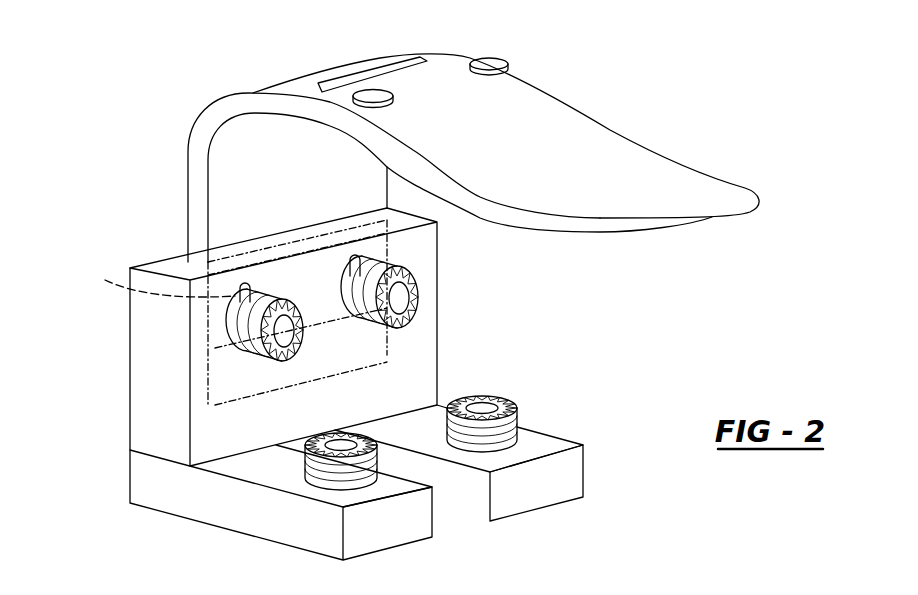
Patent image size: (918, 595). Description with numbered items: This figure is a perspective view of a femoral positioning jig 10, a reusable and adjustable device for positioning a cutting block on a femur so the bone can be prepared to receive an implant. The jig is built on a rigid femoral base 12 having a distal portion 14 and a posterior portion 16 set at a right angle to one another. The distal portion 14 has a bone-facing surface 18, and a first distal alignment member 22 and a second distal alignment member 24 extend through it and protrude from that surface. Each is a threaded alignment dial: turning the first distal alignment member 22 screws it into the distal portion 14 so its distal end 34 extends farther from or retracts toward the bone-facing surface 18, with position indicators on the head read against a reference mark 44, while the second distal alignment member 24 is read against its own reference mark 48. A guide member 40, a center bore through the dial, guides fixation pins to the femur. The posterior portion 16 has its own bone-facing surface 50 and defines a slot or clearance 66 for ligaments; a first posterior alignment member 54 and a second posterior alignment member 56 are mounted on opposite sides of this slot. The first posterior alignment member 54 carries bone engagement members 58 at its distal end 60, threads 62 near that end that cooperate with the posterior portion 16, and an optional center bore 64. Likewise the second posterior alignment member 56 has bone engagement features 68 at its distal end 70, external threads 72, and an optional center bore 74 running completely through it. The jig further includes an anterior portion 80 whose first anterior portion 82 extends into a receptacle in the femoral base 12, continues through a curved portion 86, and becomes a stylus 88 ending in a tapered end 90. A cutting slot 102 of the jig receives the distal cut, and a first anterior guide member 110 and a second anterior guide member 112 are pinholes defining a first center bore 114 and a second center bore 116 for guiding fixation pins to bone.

The femoral positioning jig 10 is at (172, 89).
The femoral base 12 is at (150, 448).
The distal portion 14 is at (150, 326).
The posterior portion 16 is at (170, 493).
The bone-facing surface 18 is at (417, 355).
The first distal alignment member 22 is at (283, 357).
The second distal alignment member 24 is at (418, 277).
The distal end 34 is at (272, 380).
The guide member 40 is at (273, 333).
The reference mark 44 is at (155, 282).
The reference mark 48 is at (362, 252).
The bone-facing surface 50 is at (553, 443).
The first posterior alignment member 54 is at (517, 511).
The second posterior alignment member 56 is at (500, 440).
The bone engagement members 58 is at (310, 443).
The distal end 60 is at (335, 480).
The threads 62 is at (345, 462).
The center bore 64 is at (343, 460).
The slot or clearance 66 is at (403, 446).
The bone engagement features 68 is at (512, 402).
The distal end 70 is at (463, 396).
The external threads 72 is at (515, 430).
The center bore 74 is at (498, 402).
The anterior portion 80 is at (437, 90).
The first anterior portion 82 is at (192, 207).
The curved portion 86 is at (212, 165).
The stylus 88 is at (678, 187).
The tapered end 90 is at (710, 218).
The cutting slot 102 is at (380, 60).
The first anterior guide member 110 is at (490, 62).
The second anterior guide member 112 is at (322, 74).
The first center bore 114 is at (490, 62).
The second center bore 116 is at (370, 90).